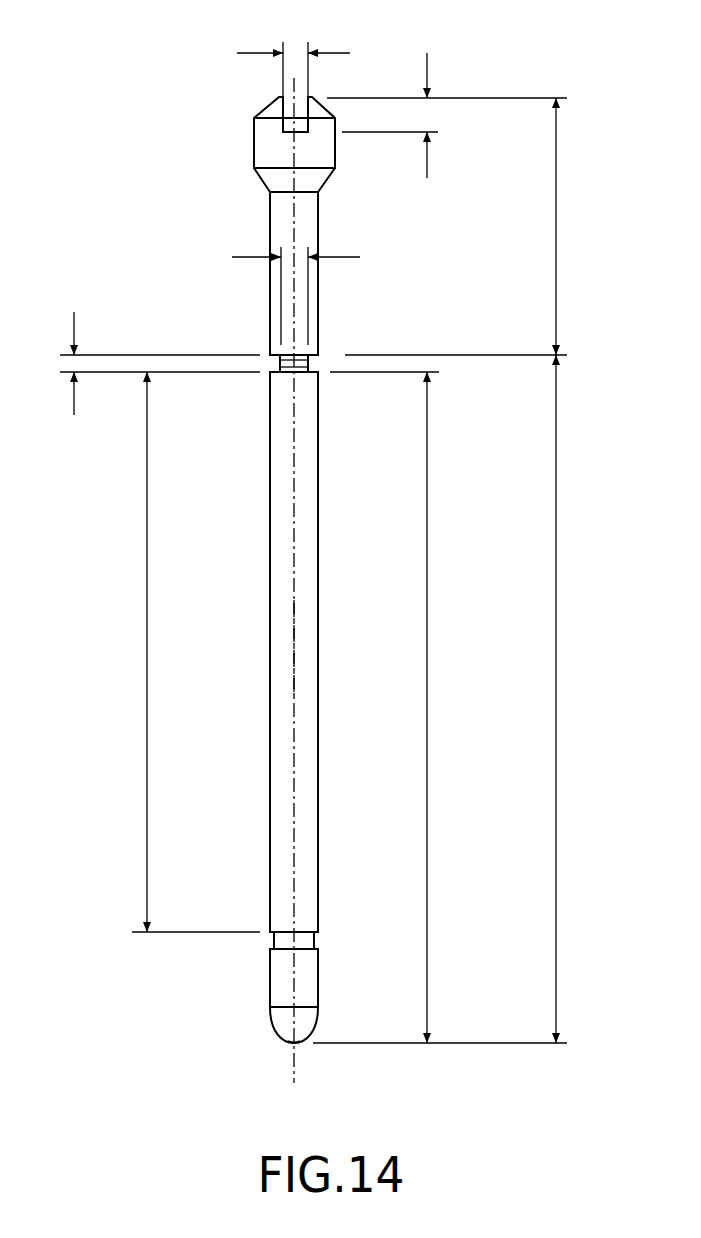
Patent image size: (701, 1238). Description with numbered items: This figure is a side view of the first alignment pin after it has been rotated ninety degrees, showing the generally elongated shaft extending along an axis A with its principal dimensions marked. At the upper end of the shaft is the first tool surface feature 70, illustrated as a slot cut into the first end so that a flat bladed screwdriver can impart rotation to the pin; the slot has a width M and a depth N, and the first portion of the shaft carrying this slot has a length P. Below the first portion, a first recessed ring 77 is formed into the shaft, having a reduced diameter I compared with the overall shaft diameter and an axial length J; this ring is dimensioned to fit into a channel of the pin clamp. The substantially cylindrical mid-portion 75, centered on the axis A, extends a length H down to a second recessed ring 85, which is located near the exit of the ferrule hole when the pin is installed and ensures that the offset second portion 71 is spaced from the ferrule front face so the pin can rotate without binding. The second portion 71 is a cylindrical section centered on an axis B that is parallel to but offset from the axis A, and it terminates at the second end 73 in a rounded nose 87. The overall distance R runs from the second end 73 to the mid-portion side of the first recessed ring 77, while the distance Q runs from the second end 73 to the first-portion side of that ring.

The first tool surface feature 70 is at (280, 103).
The first recessed ring 77 is at (310, 362).
The mid-portion 75 is at (147, 698).
The second recessed ring 85 is at (317, 940).
The second portion 71 is at (255, 1025).
The rounded nose 87 is at (273, 1027).
The second end 73 is at (298, 1045).
The axis A is at (297, 657).
The axis B is at (297, 985).
The width M is at (293, 32).
The depth N is at (447, 115).
The length P is at (569, 226).
The distance Q is at (448, 699).
The distance R is at (391, 707).
The length H is at (196, 652).
The length J is at (305, 363).
The reduced diameter I is at (288, 252).